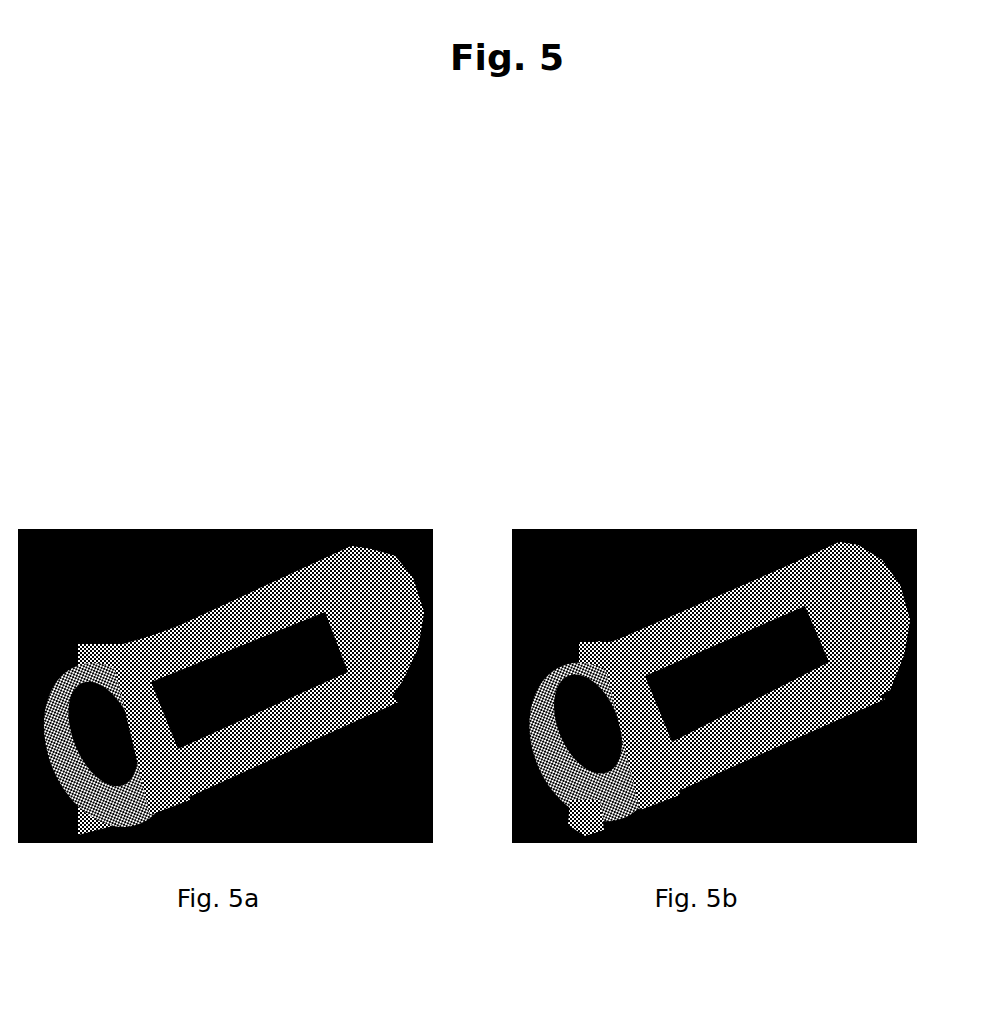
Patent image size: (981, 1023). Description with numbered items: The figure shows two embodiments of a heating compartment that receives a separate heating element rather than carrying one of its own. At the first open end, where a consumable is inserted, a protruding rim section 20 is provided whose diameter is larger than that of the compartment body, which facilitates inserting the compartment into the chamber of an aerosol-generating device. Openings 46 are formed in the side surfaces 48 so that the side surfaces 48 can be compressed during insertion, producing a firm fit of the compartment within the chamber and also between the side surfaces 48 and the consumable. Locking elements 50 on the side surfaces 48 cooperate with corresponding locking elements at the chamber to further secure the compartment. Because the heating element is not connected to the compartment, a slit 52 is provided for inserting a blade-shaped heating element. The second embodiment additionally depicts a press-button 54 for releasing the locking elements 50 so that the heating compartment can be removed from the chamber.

In FIG. 5A, the protruding rim section 20 is at (68, 662).
In FIG. 5B, the protruding rim section 20 is at (545, 662).
In FIG. 5A, the openings 46 is at (218, 676).
In FIG. 5B, the openings 46 is at (699, 676).
In FIG. 5A, the side surfaces 48 is at (311, 579).
In FIG. 5B, the side surfaces 48 is at (789, 589).
In FIG. 5A, the locking elements 50 is at (146, 646).
In FIG. 5B, the locking elements 50 is at (627, 646).
In FIG. 5A, the slit 52 is at (371, 656).
In FIG. 5B, the slit 52 is at (852, 622).
In FIG. 5B, the press-button 54 is at (594, 652).